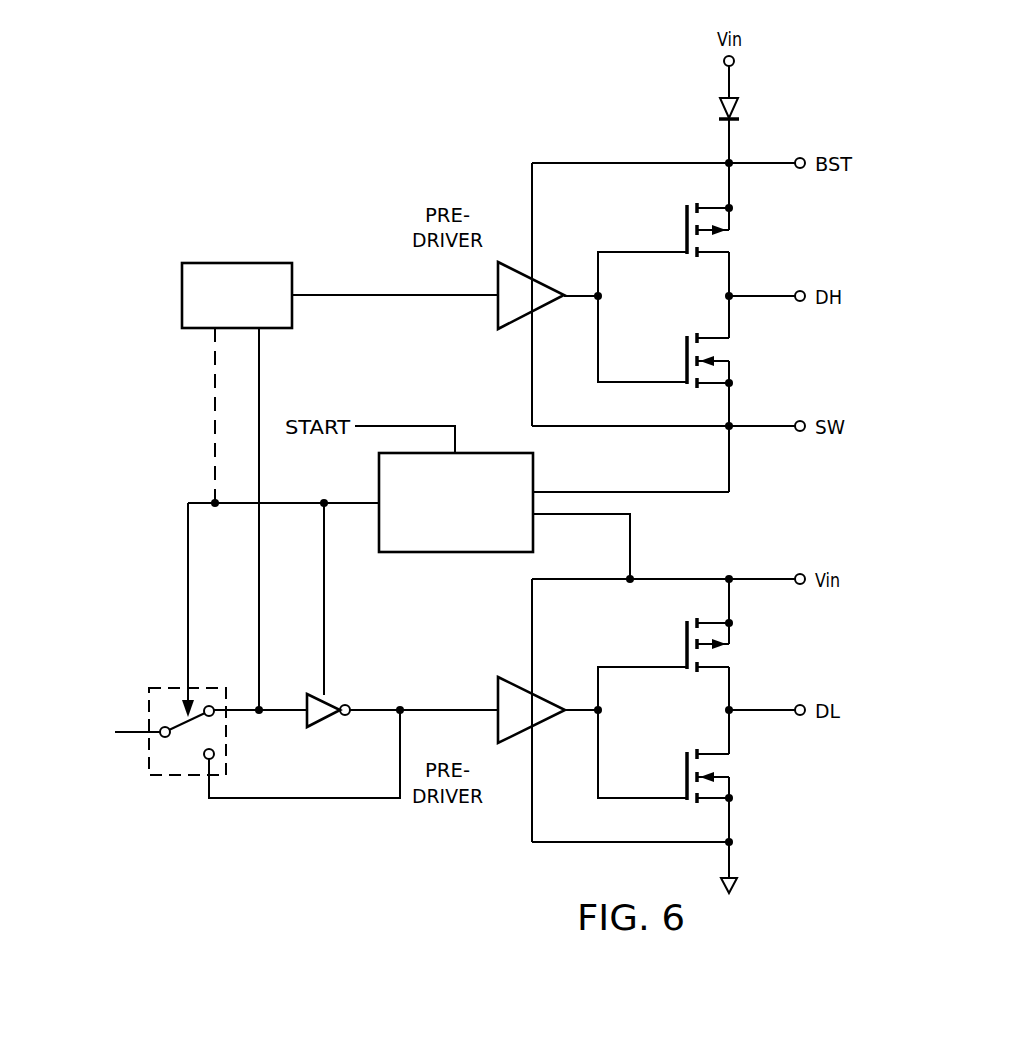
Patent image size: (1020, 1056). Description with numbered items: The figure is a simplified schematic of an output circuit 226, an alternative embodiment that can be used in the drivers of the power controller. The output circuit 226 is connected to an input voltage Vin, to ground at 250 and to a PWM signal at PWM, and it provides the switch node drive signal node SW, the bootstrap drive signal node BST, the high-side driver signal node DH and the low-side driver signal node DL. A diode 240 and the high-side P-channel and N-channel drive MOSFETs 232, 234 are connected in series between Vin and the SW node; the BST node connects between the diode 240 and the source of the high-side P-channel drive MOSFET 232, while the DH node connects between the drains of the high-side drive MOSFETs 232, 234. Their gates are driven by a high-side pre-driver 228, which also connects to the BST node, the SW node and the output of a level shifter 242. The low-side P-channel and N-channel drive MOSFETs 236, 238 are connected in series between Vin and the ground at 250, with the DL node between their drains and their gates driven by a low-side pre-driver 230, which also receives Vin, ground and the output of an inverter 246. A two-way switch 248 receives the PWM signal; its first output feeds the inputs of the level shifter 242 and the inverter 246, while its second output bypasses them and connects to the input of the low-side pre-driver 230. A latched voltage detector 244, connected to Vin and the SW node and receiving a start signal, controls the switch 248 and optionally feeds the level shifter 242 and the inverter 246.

The output circuit 226 is at (308, 62).
The high-side pre-driver 228 is at (496, 278).
The low-side pre-driver 230 is at (496, 728).
The high-side P-channel drive MOSFET 232 is at (684, 222).
The high-side N-channel drive MOSFET 234 is at (684, 352).
The low-side P-channel drive MOSFET 236 is at (684, 636).
The low-side N-channel drive MOSFET 238 is at (684, 766).
The diode 240 is at (740, 108).
The level shifter 242 is at (236, 262).
The latched voltage detector 244 is at (445, 553).
The inverter 246 is at (328, 716).
The 2-way switch 248 is at (160, 776).
The ground 250 is at (735, 891).